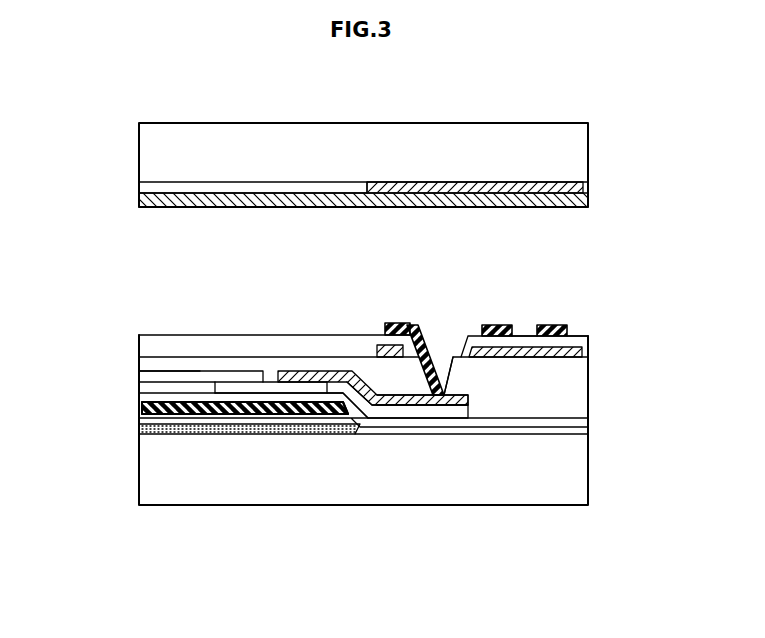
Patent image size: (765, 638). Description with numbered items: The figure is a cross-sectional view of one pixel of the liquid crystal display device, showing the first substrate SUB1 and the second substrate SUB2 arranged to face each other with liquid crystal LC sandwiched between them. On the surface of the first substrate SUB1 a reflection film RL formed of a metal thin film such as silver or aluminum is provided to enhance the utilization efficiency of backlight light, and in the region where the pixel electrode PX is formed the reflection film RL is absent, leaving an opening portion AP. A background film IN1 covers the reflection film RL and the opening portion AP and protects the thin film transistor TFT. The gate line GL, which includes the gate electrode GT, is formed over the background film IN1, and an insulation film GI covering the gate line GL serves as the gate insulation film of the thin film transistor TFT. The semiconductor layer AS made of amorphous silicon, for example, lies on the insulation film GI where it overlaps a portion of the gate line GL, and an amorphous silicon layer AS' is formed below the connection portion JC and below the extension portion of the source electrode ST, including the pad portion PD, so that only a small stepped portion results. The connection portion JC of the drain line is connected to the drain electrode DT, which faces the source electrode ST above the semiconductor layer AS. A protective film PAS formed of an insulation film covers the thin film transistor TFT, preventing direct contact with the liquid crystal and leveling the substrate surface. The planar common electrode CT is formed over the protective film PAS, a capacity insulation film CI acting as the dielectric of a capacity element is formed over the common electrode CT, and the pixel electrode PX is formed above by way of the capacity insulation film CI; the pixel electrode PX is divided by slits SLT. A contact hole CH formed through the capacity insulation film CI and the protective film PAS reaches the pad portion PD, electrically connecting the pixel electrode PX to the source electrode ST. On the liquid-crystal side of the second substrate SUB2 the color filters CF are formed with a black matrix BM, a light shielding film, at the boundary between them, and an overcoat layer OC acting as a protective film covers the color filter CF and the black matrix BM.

The black matrix BM is at (252, 191).
The color filter CF is at (416, 191).
The second substrate SUB2 is at (589, 153).
The overcoat layer OC is at (590, 201).
The liquid crystal LC is at (314, 240).
The first substrate SUB1 is at (589, 481).
The background film IN1 is at (589, 432).
The reflection film RL is at (346, 432).
The insulation film GI is at (589, 421).
The gate electrode GT is at (201, 404).
The gate line GL is at (163, 404).
The amorphous silicon layer AS' is at (270, 469).
The semiconductor layer AS is at (271, 328).
The drain electrode DT is at (253, 372).
The connection portion JC is at (186, 376).
The source electrode ST is at (331, 376).
The pad portion PD is at (396, 406).
The protective film PAS is at (140, 362).
The common electrode CT is at (382, 352).
The capacity insulation film CI is at (140, 340).
The contact hole CH is at (447, 353).
The pixel electrode PX is at (396, 324).
The slit SLT is at (522, 325).
The thin film transistor TFT is at (333, 441).
The opening portion AP is at (370, 441).